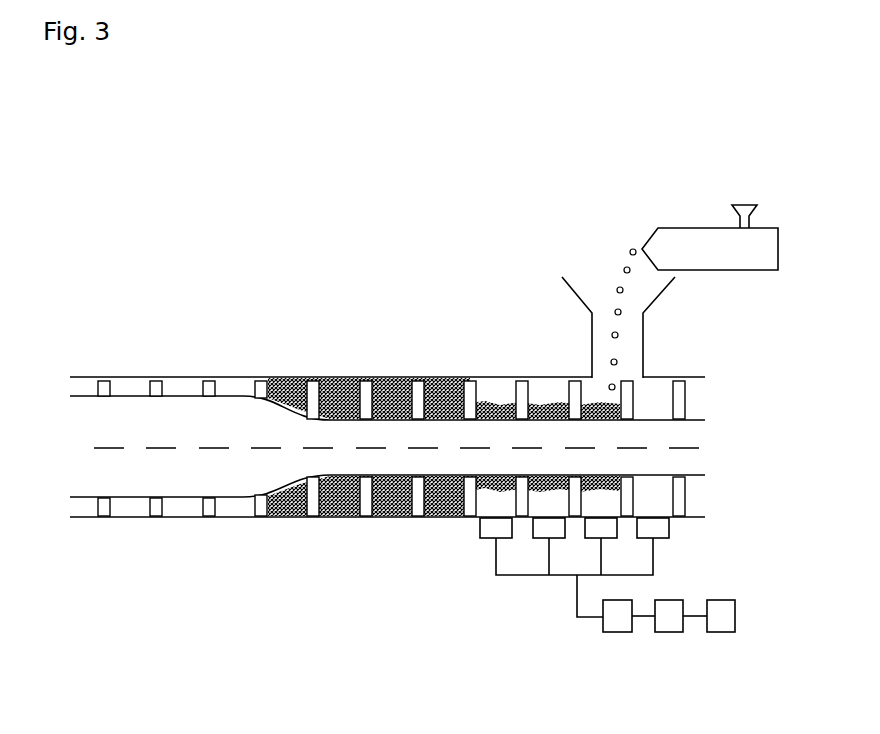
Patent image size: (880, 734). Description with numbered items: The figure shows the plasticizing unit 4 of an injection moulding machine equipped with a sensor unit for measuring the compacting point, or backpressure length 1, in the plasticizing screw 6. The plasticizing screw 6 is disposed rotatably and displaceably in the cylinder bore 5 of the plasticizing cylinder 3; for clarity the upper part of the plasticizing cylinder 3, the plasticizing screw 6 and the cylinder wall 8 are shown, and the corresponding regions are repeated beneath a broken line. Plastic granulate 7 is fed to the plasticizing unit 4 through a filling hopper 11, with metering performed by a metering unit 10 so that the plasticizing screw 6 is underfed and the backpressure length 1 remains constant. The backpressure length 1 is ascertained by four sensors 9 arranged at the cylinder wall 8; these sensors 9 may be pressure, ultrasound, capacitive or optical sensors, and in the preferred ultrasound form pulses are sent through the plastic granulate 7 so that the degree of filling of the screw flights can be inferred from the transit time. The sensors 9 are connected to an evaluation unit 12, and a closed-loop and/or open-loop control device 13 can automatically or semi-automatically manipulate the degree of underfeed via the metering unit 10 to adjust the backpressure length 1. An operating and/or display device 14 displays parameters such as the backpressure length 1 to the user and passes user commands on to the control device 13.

The backpressure length 1 is at (470, 377).
The plasticizing cylinder 3 is at (210, 535).
The plasticizing unit 4 is at (478, 225).
The cylinder bore 5 is at (712, 396).
The plasticizing screw 6 is at (678, 492).
The plastic granulate 7 is at (623, 267).
The cylinder wall 8 is at (128, 520).
The sensors 9 is at (653, 528).
The metering unit 10 is at (692, 245).
The filling hopper 11 is at (663, 293).
The evaluation unit 12 is at (612, 625).
The closed-loop and/or open-loop control device 13 is at (670, 623).
The operating and/or display device 14 is at (720, 623).